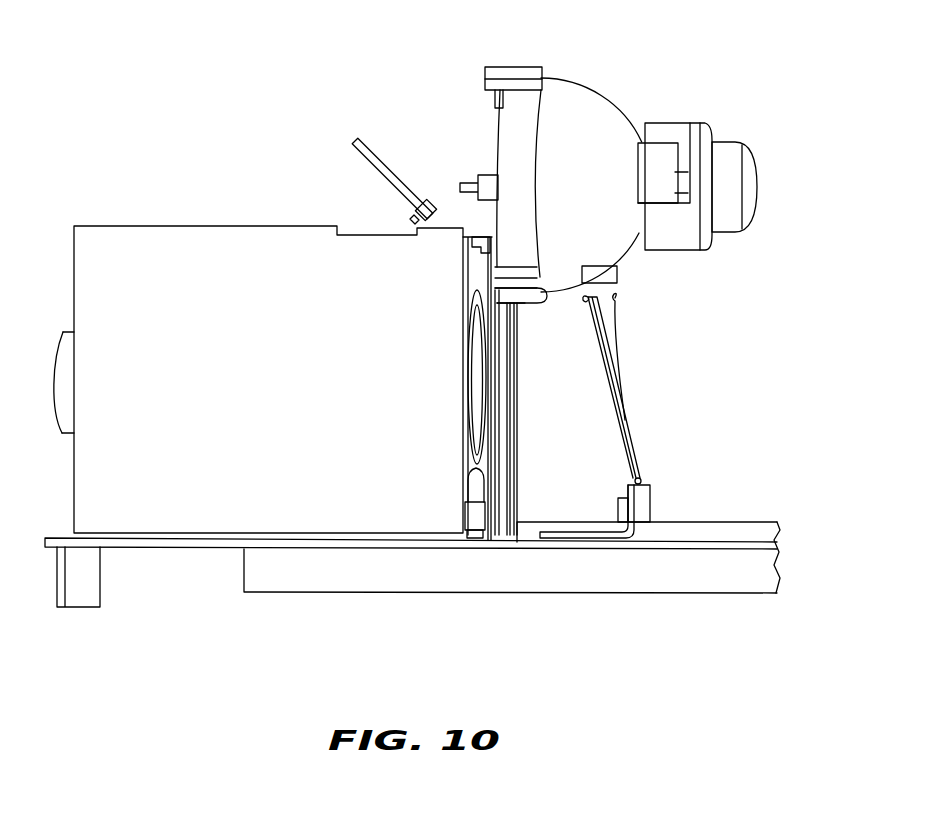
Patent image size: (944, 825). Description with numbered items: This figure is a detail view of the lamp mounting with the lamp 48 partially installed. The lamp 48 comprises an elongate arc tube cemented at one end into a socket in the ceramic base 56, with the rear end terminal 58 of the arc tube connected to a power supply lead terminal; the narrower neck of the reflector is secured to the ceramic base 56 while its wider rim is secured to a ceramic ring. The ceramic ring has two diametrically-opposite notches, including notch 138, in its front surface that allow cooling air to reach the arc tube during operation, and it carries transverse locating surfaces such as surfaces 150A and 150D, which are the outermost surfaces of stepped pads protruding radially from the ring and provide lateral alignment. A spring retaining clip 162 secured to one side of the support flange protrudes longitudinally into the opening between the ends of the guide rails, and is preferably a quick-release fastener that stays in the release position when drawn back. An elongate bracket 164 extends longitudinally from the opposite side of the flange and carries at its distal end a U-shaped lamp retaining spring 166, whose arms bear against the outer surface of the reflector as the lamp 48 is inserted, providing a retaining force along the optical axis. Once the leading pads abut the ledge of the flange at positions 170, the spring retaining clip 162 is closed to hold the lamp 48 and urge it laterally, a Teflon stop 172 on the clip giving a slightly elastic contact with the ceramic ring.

The lamp 48 is at (612, 90).
The ceramic base 56 is at (700, 123).
The rear end terminal 58 is at (735, 140).
The notch 138 is at (500, 148).
The transverse locating surface 150D is at (508, 73).
The transverse locating surface 150A is at (525, 298).
The spring retaining clip 162 is at (370, 150).
The elongate bracket 164 is at (583, 537).
The U-shaped lamp retaining spring 166 is at (627, 422).
The mounting block 170 is at (474, 505).
The stop 172 is at (432, 198).